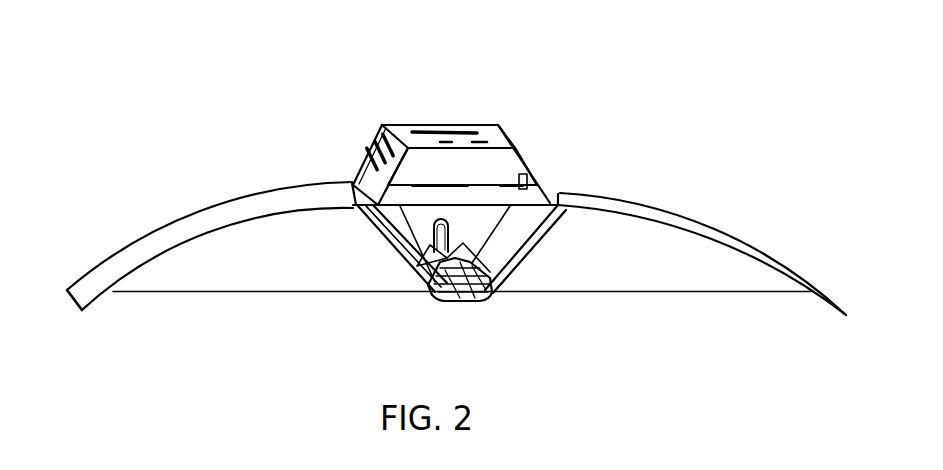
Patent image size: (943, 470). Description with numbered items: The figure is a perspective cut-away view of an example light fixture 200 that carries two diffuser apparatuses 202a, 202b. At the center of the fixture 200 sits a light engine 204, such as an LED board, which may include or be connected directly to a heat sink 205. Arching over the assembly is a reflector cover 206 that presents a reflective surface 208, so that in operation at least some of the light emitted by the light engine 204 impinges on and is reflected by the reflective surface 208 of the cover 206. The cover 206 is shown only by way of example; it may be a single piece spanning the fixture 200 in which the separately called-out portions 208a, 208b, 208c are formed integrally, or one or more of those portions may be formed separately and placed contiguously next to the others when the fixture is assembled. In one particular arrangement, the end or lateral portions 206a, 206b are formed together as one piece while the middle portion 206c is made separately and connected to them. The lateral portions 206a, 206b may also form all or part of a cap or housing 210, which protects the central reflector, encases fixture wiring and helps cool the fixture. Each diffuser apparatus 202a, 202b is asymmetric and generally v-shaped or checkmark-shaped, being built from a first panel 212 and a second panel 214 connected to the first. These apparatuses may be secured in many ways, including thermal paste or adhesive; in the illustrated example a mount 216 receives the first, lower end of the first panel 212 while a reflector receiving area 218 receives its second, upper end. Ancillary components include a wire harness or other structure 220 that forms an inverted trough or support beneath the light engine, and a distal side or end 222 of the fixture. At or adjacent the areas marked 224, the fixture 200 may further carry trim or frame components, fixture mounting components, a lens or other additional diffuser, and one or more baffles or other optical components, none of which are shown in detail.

The light fixture 200 is at (198, 70).
The diffuser apparatus 202a is at (375, 225).
The diffuser apparatus 202b is at (530, 249).
The light engine 204 is at (455, 258).
The heat sink 205 is at (459, 303).
The reflector cover 206 is at (70, 288).
The lateral portion 206a is at (233, 200).
The lateral portion 206b is at (670, 208).
The middle portion 206c is at (503, 197).
The reflective surface 208 is at (296, 294).
The reflective surface portion 208a is at (183, 262).
The reflective surface portion 208b is at (731, 254).
The reflective surface portion 208c is at (506, 214).
The housing 210 is at (523, 172).
The first panel 212 is at (398, 262).
The second panel 214 is at (394, 127).
The mount 216 is at (437, 300).
The reflector receiving area 218 is at (347, 181).
The wire harness 220 is at (386, 282).
The distal end 222 is at (688, 264).
The ancillary component areas 224 is at (250, 309).